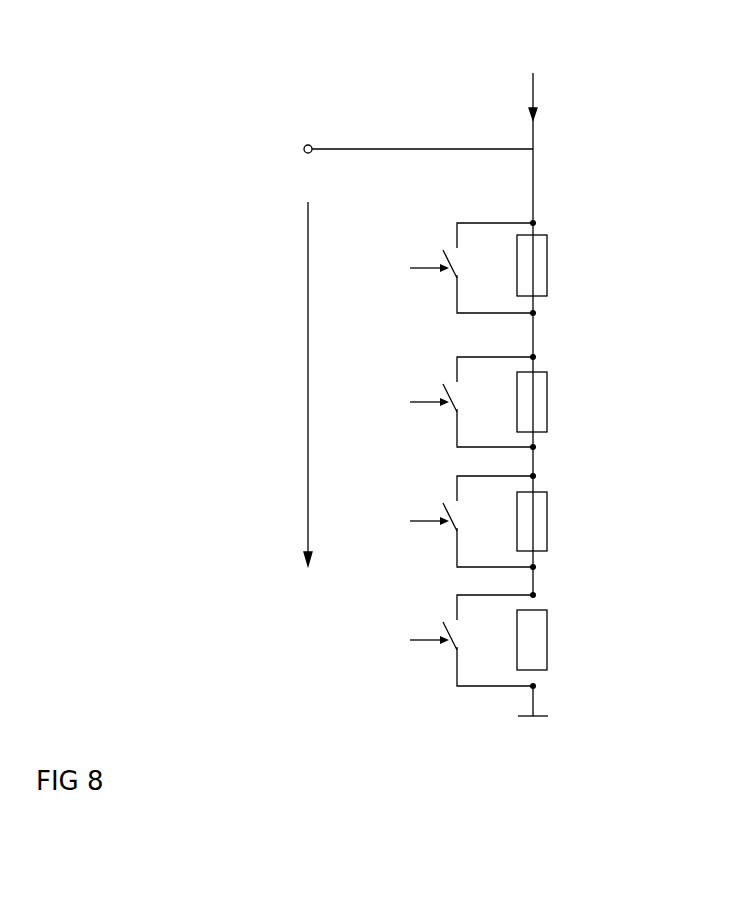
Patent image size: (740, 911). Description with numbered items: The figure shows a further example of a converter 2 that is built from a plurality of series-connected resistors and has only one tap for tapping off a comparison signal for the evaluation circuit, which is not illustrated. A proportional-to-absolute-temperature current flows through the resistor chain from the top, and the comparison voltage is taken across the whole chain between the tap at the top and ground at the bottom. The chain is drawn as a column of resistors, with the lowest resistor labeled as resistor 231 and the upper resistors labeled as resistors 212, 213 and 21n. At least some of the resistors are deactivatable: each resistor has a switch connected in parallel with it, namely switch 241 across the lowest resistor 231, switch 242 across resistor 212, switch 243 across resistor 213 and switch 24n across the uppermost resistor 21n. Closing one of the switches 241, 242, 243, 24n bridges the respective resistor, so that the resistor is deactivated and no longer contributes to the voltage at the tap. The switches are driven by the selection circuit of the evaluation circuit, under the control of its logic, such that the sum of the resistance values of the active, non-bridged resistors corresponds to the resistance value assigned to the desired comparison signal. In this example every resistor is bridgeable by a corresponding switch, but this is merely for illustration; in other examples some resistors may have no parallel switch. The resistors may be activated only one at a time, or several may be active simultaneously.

The converter 2 is at (626, 77).
The resistor n 21n is at (549, 273).
The resistor 3 213 is at (549, 407).
The resistor 2 212 is at (549, 526).
The resistor 231 is at (549, 645).
The switch 24n is at (471, 268).
The switch 243 is at (471, 402).
The switch 242 is at (471, 521).
The switch 241 is at (471, 640).